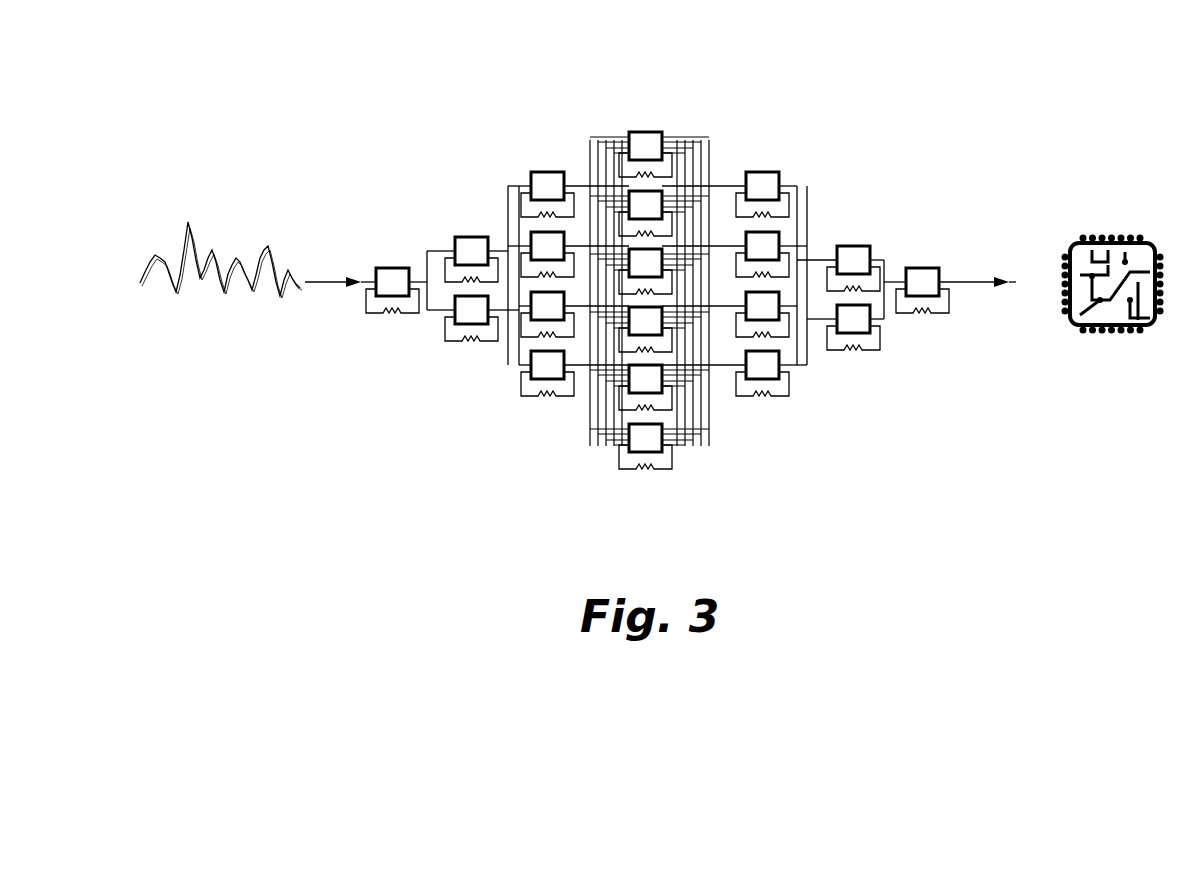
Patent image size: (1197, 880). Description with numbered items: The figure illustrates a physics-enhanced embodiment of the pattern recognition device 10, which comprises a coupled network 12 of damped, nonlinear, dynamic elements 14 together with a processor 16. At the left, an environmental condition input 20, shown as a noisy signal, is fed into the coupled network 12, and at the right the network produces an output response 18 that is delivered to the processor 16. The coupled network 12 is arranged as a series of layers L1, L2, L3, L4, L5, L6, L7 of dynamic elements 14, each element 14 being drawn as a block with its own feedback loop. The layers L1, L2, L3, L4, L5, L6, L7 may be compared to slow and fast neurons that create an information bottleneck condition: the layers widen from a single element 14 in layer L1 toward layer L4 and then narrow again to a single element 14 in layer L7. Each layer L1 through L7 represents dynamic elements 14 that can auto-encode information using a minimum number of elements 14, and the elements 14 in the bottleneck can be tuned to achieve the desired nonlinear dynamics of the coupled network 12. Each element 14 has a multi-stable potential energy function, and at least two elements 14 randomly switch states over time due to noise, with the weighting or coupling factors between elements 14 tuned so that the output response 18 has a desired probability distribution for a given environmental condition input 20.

The pattern recognition device 10 is at (256, 74).
The coupled network 12 is at (950, 113).
The dynamic element 14 is at (541, 172).
The processor 16 is at (1095, 240).
The output response 18 is at (976, 280).
The environmental condition input 20 is at (212, 213).
The layer L1 is at (390, 336).
The layer L2 is at (470, 369).
The layer L3 is at (543, 432).
The layer L4 is at (652, 482).
The layer L5 is at (763, 427).
The layer L6 is at (850, 377).
The layer L7 is at (935, 347).